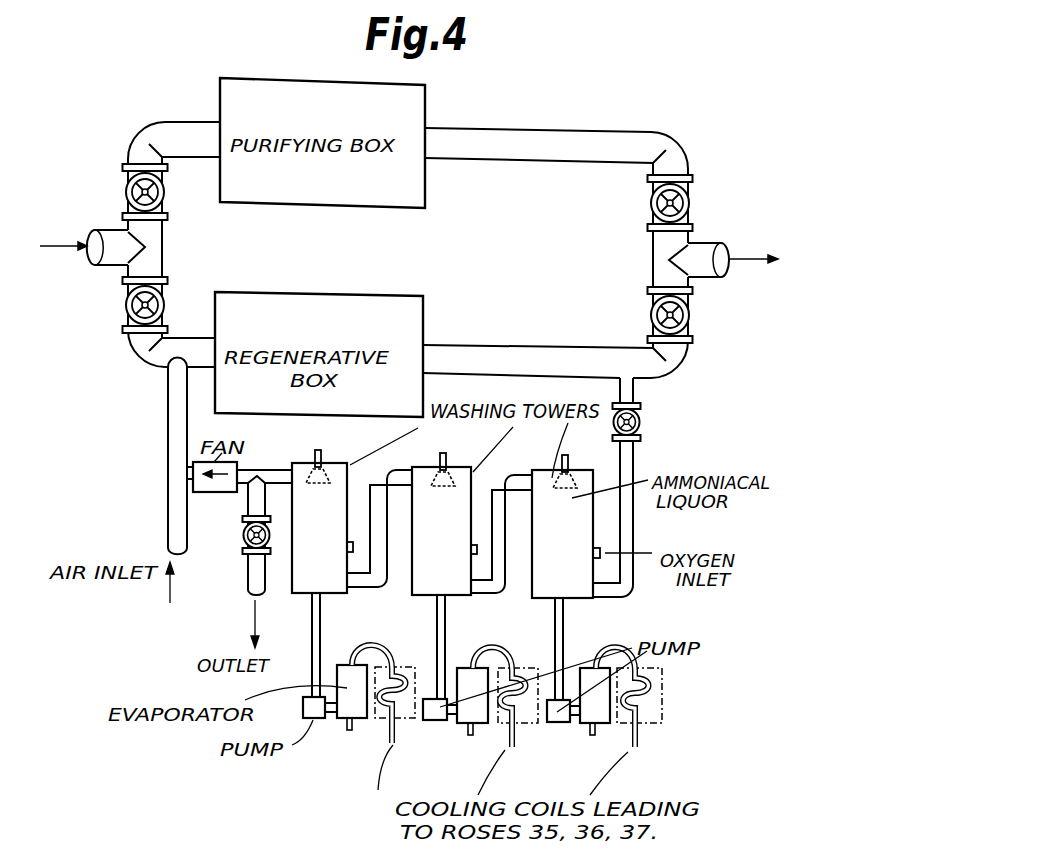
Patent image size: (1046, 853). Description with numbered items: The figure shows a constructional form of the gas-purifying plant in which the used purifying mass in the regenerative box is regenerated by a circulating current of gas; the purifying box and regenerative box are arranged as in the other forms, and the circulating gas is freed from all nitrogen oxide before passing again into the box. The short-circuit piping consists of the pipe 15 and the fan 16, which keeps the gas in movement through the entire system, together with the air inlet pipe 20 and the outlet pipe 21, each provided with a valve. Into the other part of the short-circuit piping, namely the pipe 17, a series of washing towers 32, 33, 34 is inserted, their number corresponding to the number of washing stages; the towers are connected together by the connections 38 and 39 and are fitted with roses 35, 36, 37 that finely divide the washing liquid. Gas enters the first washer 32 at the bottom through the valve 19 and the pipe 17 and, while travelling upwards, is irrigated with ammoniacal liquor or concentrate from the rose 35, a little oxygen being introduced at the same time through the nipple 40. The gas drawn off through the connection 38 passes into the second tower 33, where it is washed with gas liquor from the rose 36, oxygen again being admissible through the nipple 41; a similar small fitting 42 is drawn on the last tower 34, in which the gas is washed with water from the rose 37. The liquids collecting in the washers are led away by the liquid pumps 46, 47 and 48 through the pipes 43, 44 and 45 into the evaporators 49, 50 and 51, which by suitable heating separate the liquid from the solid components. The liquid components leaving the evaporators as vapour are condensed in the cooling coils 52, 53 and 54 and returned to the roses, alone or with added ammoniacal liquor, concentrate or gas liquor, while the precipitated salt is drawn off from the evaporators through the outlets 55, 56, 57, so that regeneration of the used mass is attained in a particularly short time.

The pipe 15 is at (170, 421).
The fan 16 is at (224, 488).
The pipe 17 is at (622, 518).
The valve 19 is at (641, 423).
The inlet pipe 20 is at (172, 525).
The outlet pipe 21 is at (255, 572).
The washing tower 32 is at (543, 480).
The washing tower 33 is at (423, 475).
The washing tower 34 is at (302, 475).
The rose 35 is at (569, 465).
The rose 36 is at (447, 459).
The rose 37 is at (323, 457).
The connection 38 is at (484, 593).
The connection 39 is at (350, 590).
The nipple 40 is at (611, 542).
The nipple 41 is at (477, 552).
The inlet 42 is at (363, 547).
The pipe 43 is at (313, 628).
The pipe 44 is at (440, 627).
The pipe 45 is at (560, 629).
The liquid pump 46 is at (307, 708).
The liquid pump 47 is at (438, 718).
The liquid pump 48 is at (562, 716).
The evaporator 49 is at (342, 665).
The evaporator 50 is at (462, 668).
The evaporator 51 is at (584, 675).
The cooling coil 52 is at (395, 740).
The cooling coil 53 is at (518, 716).
The cooling coil 54 is at (643, 714).
The salt outlet 55 is at (349, 730).
The salt outlet 56 is at (470, 735).
The salt outlet 57 is at (590, 735).